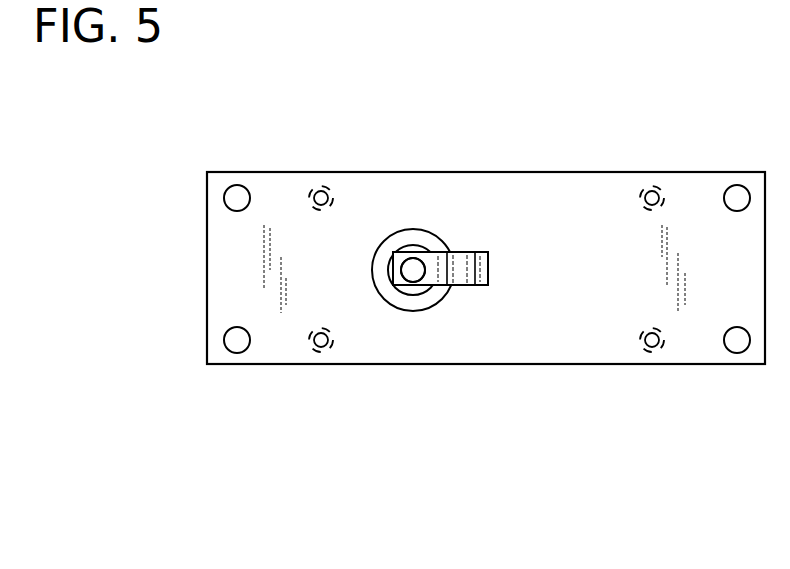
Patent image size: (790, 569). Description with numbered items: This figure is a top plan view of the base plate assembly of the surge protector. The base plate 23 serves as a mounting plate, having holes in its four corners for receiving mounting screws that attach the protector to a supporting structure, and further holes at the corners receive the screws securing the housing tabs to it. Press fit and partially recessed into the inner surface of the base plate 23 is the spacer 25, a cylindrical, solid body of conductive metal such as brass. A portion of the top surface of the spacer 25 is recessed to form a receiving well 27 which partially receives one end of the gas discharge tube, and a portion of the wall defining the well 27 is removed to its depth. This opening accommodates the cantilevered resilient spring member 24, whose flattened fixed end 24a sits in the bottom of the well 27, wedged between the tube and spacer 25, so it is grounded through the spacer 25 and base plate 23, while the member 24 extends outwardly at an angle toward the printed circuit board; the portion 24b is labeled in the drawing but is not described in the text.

The base plate 23 is at (258, 366).
The spring member 24 is at (469, 270).
The fixed end 24a is at (419, 290).
The lever portion 24b is at (477, 252).
The spacer 25 is at (413, 228).
The receiving well 27 is at (391, 268).